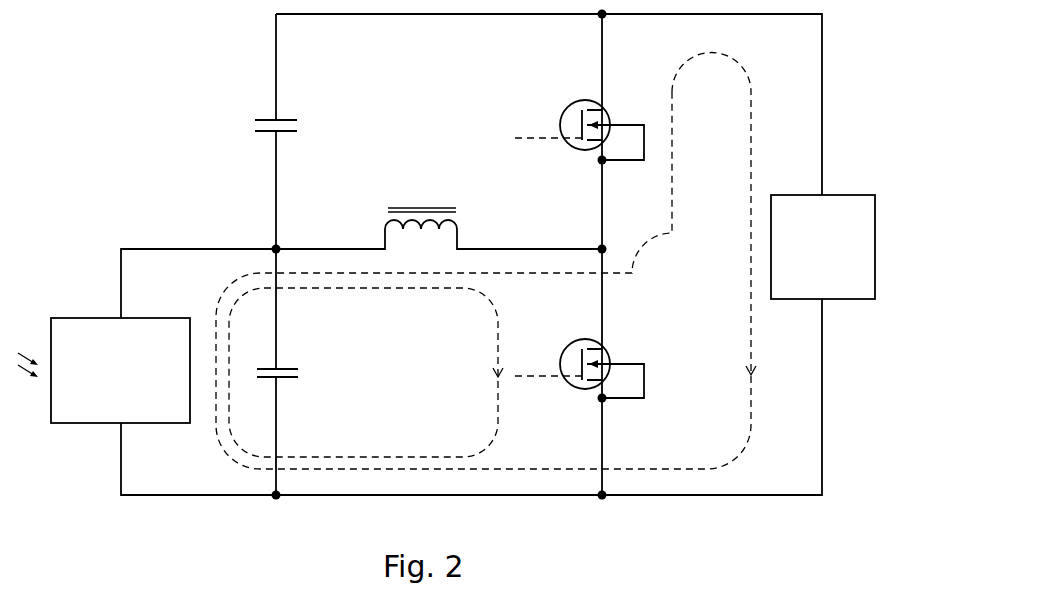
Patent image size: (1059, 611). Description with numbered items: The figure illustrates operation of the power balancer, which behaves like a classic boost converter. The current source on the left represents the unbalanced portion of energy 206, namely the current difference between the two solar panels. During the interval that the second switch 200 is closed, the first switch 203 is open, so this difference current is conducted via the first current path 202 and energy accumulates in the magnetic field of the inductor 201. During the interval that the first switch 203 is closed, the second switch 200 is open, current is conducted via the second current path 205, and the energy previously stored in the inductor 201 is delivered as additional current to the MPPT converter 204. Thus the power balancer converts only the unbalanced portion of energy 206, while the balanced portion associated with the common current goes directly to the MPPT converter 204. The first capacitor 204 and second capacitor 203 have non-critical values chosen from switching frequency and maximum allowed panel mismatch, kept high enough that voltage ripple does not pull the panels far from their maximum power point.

The switch SW2 200 is at (611, 352).
The inductor L1 201 is at (440, 196).
The PATH1 202 is at (422, 457).
The switch SW1 / capacitor C2 203 is at (663, 100).
The MPPT converter / capacitor C1 204 is at (290, 110).
The PATH2 205 is at (637, 469).
The unbalanced portion of energy 206 is at (155, 318).